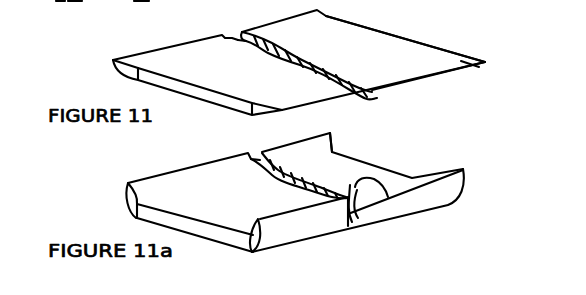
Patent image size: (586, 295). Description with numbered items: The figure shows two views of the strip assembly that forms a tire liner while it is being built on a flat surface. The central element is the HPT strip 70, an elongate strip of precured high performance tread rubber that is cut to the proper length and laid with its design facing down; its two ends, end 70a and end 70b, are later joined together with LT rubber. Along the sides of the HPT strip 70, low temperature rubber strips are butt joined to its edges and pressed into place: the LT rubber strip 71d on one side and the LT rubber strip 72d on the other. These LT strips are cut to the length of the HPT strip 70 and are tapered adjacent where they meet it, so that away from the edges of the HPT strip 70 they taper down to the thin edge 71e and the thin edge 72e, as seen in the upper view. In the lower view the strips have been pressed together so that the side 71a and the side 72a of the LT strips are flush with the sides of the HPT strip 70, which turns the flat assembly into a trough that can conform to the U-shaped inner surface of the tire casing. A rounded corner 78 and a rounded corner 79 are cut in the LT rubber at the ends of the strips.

In FIG. 11, the HPT strip 70 is at (228, 75).
In FIG. 11A, the HPT strip 70 is at (264, 203).
In FIG. 11, the end of the strip 70a is at (213, 97).
In FIG. 11A, the end of the strip 70a is at (208, 234).
In FIG. 11, the end of the strip 70b is at (388, 30).
In FIG. 11A, the end of the strip 70b is at (394, 169).
In FIG. 11, the tapered edge 71e is at (147, 50).
In FIG. 11, the LT rubber strip 71d is at (322, 15).
In FIG. 11A, the side of the strip 71a is at (333, 143).
In FIG. 11, the tapered edge 72e is at (413, 82).
In FIG. 11, the LT rubber strip 72d is at (462, 62).
In FIG. 11A, the side of the strip 72a is at (388, 197).
In FIG. 11A, the rounded corner 78 is at (256, 252).
In FIG. 11A, the rounded corner 79 is at (131, 218).